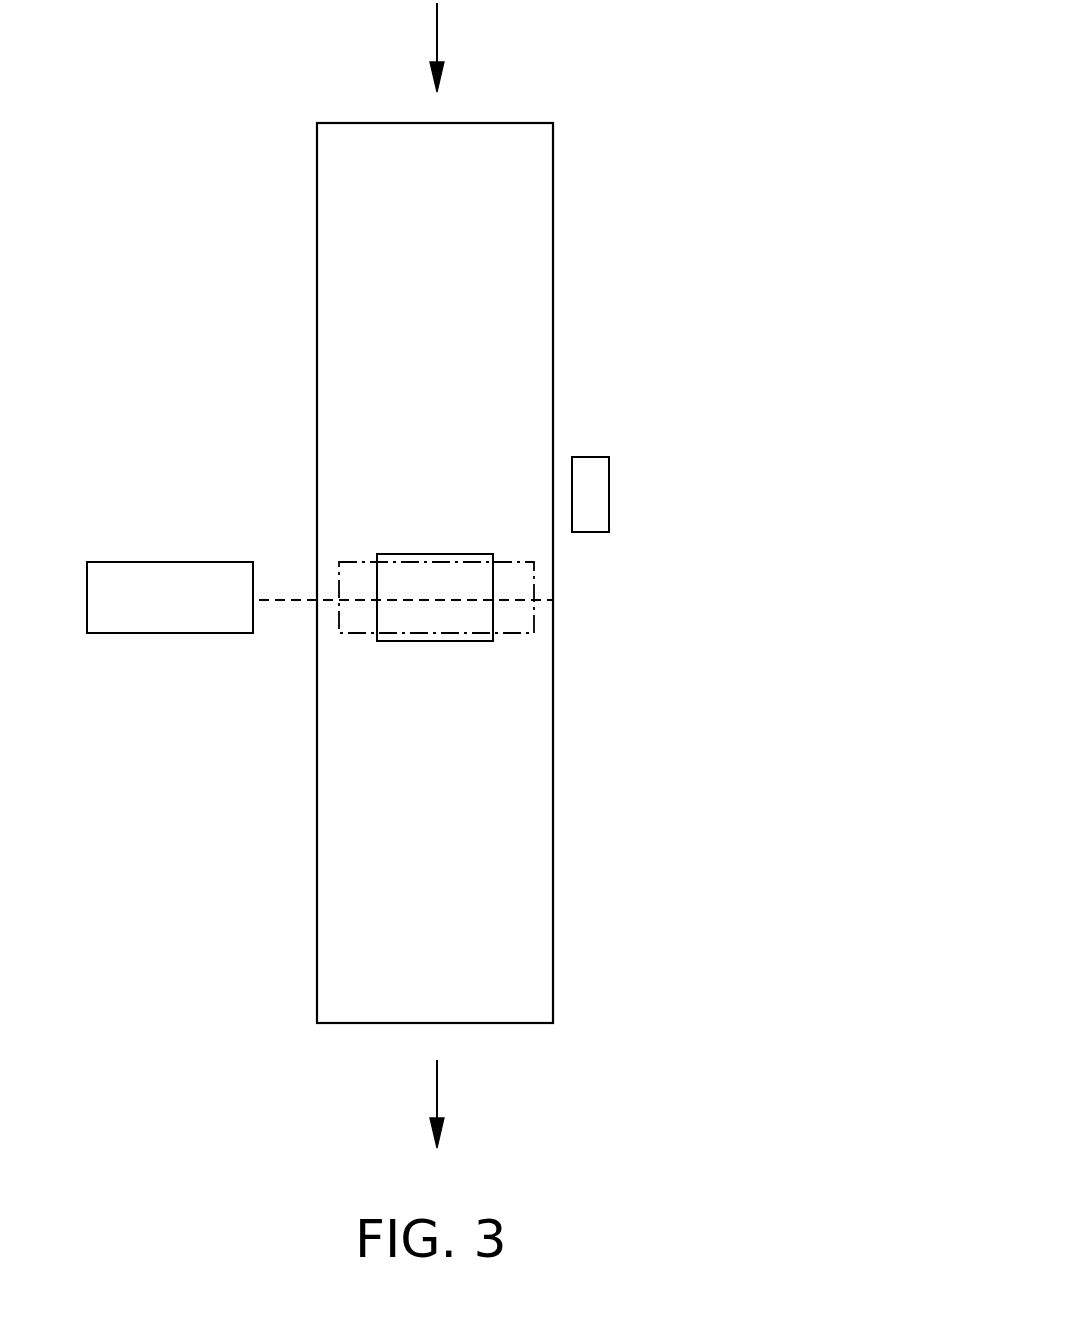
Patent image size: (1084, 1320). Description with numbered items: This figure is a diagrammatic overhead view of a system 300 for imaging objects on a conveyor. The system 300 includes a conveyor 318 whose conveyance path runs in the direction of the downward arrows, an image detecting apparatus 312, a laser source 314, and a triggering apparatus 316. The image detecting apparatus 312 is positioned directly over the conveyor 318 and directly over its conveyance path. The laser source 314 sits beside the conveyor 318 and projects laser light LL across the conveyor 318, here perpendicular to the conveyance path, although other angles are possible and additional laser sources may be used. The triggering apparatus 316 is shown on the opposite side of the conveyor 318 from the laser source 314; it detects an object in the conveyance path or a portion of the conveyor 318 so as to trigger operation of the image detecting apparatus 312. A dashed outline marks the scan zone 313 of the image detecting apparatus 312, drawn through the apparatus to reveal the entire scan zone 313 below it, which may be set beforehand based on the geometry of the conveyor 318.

The system 300 is at (680, 141).
The conveyor 318 is at (317, 332).
The laser source 314 is at (173, 562).
The triggering apparatus 316 is at (609, 461).
The laser light LL is at (305, 600).
The scan zone 313 is at (534, 614).
The image detecting apparatus 312 is at (493, 641).